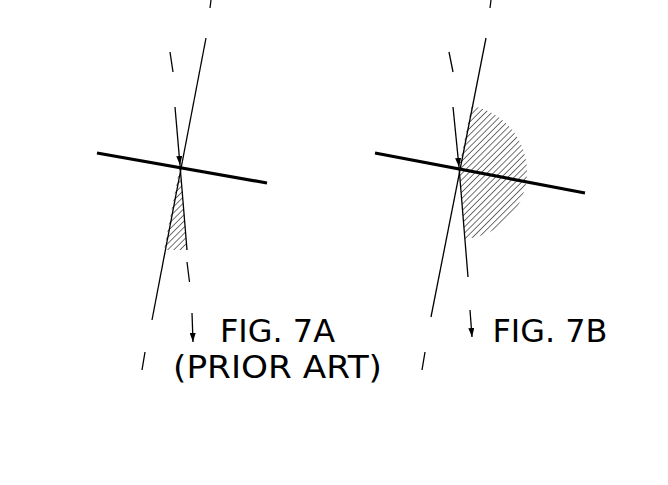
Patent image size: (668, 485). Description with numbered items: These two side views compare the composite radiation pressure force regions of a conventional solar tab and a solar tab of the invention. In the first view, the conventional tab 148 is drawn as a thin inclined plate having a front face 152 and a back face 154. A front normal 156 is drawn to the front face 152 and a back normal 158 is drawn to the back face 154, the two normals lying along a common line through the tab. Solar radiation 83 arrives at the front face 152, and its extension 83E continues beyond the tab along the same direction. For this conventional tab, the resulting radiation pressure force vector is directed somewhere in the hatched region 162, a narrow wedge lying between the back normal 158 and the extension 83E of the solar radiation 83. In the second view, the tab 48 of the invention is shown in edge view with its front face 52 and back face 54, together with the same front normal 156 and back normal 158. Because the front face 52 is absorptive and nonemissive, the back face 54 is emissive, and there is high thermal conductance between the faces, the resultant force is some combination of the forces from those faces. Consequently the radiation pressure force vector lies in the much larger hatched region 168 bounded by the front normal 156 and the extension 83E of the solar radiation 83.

In FIG. 7A, the front normal 156 is at (189, 160).
In FIG. 7B, the front normal 156 is at (469, 158).
In FIG. 7A, the solar radiation 83 is at (174, 108).
In FIG. 7B, the solar radiation 83 is at (451, 109).
In FIG. 7A, the conventional tab 148 is at (263, 172).
In FIG. 7A, the front face 152 is at (134, 161).
In FIG. 7A, the back face 154 is at (136, 164).
In FIG. 7A, the region 162 is at (178, 238).
In FIG. 7A, the extension of the solar radiation 83E is at (193, 253).
In FIG. 7B, the extension of the solar radiation 83E is at (471, 252).
In FIG. 7A, the back normal 158 is at (155, 346).
In FIG. 7B, the back normal 158 is at (432, 346).
In FIG. 7B, the tab 48 is at (583, 184).
In FIG. 7B, the front face 52 is at (413, 161).
In FIG. 7B, the back face 54 is at (416, 166).
In FIG. 7B, the region 168 is at (460, 172).